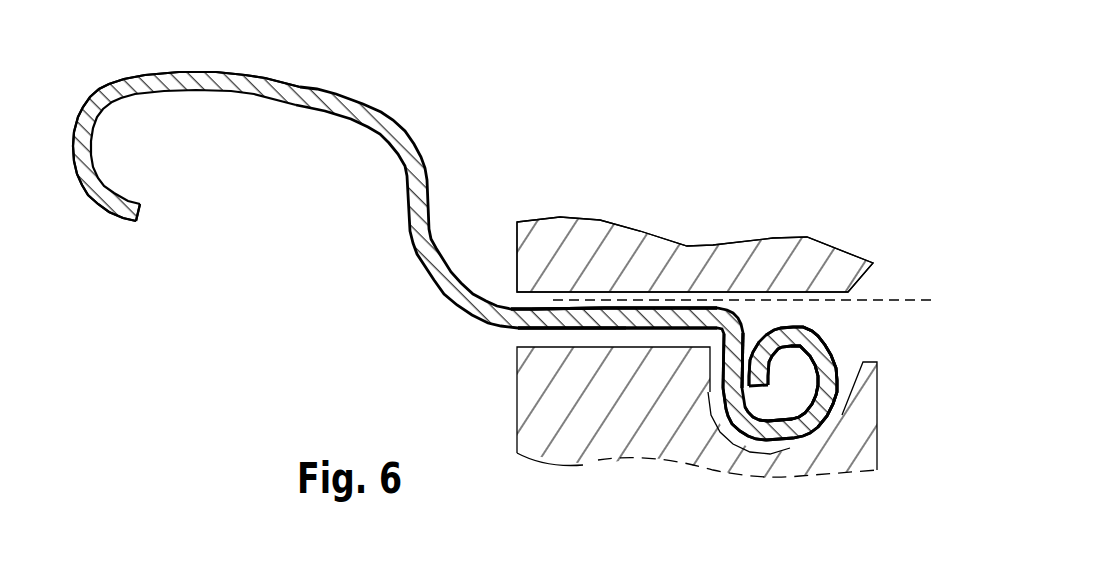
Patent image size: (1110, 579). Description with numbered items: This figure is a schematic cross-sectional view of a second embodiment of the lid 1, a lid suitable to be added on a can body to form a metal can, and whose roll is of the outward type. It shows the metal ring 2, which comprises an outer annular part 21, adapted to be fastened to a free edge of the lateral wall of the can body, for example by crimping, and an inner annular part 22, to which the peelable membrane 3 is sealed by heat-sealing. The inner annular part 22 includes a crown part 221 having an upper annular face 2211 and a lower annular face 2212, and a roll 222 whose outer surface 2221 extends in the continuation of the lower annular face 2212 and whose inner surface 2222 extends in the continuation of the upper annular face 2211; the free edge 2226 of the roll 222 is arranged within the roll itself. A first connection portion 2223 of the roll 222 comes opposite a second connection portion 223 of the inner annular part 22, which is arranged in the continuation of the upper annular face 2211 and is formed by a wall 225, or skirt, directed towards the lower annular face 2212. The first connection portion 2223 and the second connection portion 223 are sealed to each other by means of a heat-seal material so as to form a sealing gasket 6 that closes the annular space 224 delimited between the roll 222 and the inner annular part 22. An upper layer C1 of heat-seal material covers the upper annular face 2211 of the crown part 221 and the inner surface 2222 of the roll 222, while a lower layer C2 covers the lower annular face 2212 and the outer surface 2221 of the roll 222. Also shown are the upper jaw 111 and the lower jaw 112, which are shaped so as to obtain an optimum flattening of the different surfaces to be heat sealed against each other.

The lid 1 is at (866, 203).
The metal ring 2 is at (104, 72).
The outer annular part 21 is at (185, 110).
The inner annular part 22 is at (625, 294).
The crown part 221 is at (578, 317).
The upper annular face 2211 is at (657, 312).
The lower annular face 2212 is at (587, 357).
The roll 222 is at (849, 405).
The outer surface 2221 is at (853, 340).
The inner surface 2222 is at (771, 443).
The first connection portion 2223 is at (676, 419).
The second connection portion 223 is at (724, 366).
The annular space 224 is at (786, 289).
The sealing gasket 6 is at (752, 321).
The wall 225 is at (712, 420).
The free edge 2226 is at (800, 421).
The peelable membrane 3 is at (912, 287).
The upper jaw 111 is at (703, 258).
The lower jaw 112 is at (594, 413).
The upper layer C1 is at (529, 294).
The lower layer C2 is at (540, 359).